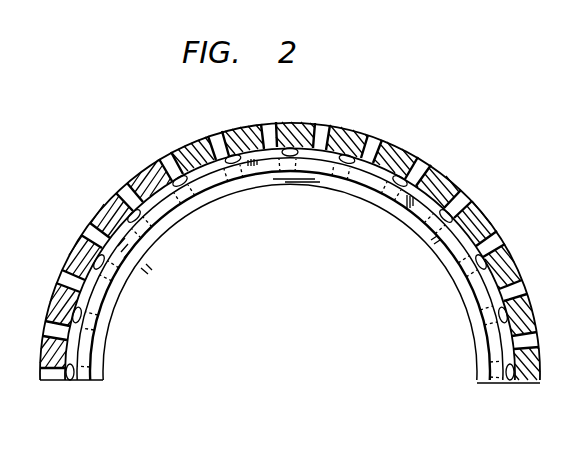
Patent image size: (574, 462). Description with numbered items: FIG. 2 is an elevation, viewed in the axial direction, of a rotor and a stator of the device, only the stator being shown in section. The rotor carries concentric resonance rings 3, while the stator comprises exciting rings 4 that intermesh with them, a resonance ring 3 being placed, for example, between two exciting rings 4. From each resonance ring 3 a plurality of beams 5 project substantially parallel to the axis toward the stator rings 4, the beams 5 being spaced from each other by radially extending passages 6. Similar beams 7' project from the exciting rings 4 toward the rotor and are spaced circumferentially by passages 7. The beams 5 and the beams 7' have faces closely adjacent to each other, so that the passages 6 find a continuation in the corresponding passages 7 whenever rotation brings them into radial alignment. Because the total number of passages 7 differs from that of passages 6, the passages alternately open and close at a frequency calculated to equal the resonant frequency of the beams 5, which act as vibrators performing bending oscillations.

The resonance ring 3 is at (487, 225).
The exciting ring 4 is at (444, 181).
The beam 5 is at (160, 213).
The passage 6 is at (396, 180).
The passage 7 is at (289, 230).
The beam 7' is at (267, 120).